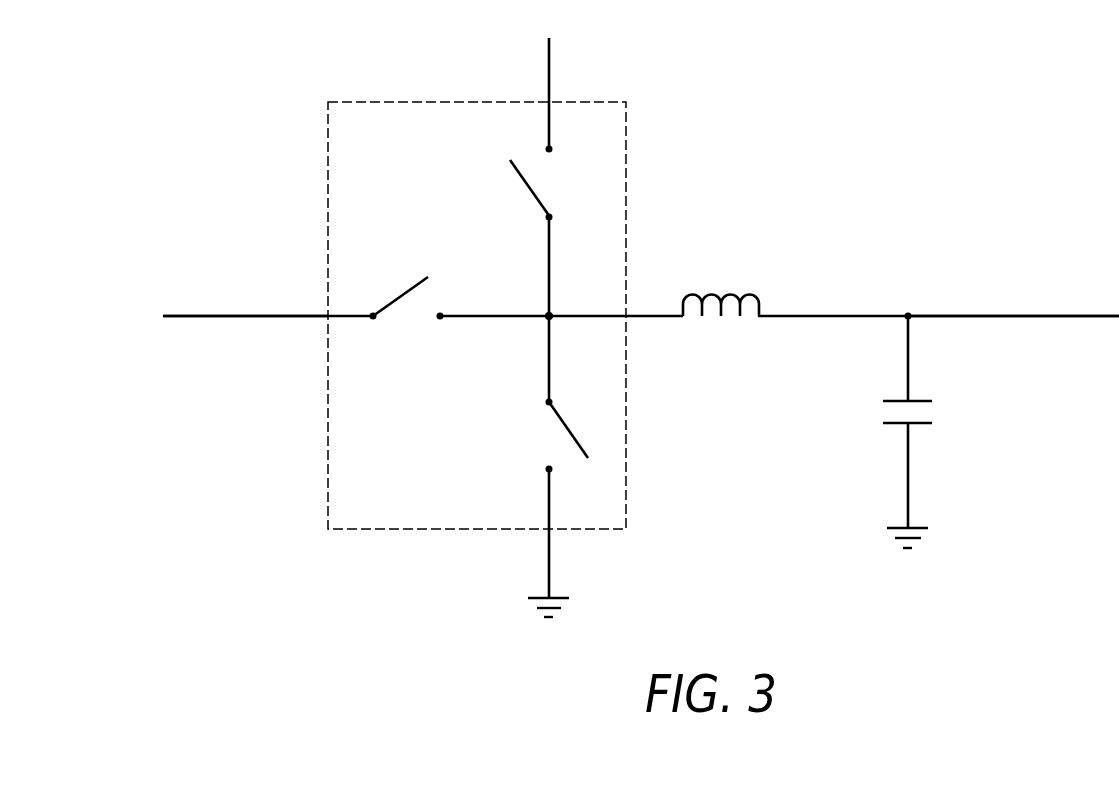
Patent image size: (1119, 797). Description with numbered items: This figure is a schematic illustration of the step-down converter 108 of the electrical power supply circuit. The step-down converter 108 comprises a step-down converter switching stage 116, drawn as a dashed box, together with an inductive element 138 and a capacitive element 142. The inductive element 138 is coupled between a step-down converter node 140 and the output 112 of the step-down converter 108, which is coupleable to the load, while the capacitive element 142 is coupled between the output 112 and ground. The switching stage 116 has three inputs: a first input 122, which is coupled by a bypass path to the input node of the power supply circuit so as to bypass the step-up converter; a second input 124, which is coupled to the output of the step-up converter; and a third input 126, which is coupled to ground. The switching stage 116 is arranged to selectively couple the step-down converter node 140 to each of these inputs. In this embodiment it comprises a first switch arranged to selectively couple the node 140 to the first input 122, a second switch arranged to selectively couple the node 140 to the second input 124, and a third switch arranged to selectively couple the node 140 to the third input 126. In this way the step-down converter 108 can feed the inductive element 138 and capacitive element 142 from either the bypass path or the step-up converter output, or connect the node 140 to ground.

The step-down converter 108 is at (1084, 58).
The output 112 is at (1040, 316).
The step-down converter switching stage 116 is at (402, 181).
The first input 122 is at (549, 103).
The second input 124 is at (328, 316).
The third input 126 is at (549, 529).
The inductive element 138 is at (723, 288).
The step-down converter node 140 is at (549, 316).
The capacitive element 142 is at (956, 416).